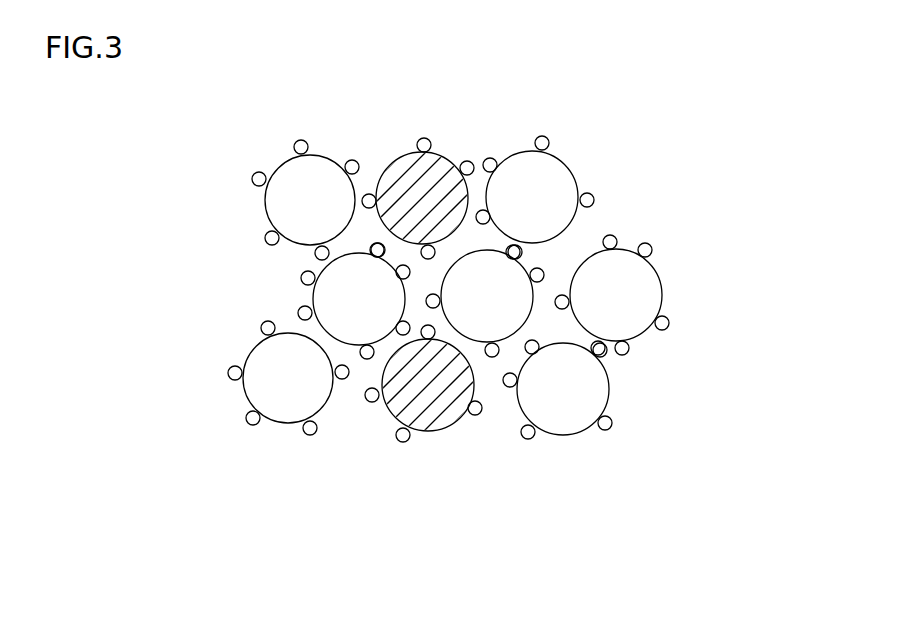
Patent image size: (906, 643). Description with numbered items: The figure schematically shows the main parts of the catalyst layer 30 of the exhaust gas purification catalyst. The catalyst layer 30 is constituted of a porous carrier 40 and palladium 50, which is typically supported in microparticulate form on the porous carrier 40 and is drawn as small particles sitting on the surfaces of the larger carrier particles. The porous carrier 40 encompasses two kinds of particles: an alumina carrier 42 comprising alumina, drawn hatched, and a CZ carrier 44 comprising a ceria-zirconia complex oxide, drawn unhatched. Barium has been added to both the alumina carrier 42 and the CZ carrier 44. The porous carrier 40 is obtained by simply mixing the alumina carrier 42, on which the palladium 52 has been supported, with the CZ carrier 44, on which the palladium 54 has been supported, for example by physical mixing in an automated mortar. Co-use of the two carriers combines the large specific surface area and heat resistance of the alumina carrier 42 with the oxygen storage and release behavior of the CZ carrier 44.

The catalyst layer 30 is at (652, 246).
The porous carrier 40 is at (615, 503).
The alumina carrier 42 is at (436, 413).
The CZ carrier 44 is at (568, 418).
The palladium 50 is at (411, 285).
The palladium 52 is at (403, 444).
The palladium 54 is at (612, 420).